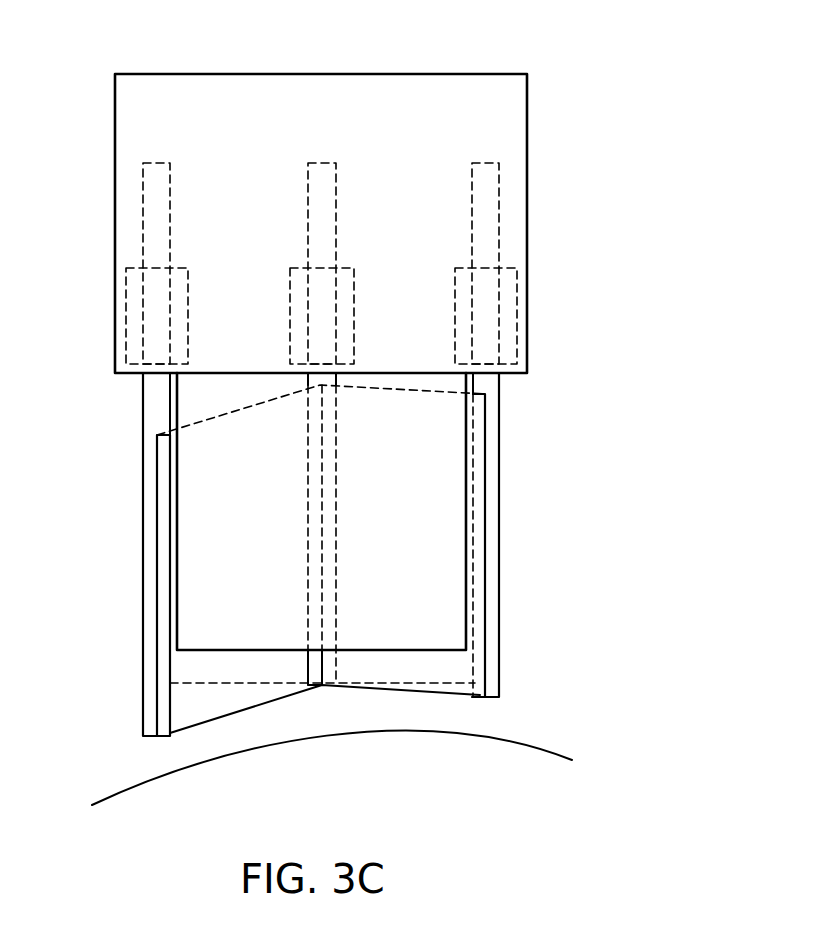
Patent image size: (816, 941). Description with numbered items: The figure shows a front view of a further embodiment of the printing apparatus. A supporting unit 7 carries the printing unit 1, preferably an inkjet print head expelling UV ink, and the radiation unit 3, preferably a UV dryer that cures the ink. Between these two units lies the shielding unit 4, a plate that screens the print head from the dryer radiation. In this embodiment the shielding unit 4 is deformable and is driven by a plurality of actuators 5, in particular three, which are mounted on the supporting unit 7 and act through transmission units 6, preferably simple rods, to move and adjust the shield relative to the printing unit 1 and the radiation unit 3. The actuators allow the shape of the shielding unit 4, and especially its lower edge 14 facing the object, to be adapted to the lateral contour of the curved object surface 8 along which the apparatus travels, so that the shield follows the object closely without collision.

The printing unit 1 is at (208, 683).
The radiation unit 3 is at (414, 650).
The shielding unit 4 is at (227, 718).
The actuator 5 is at (133, 277).
The transmission unit 6 is at (160, 215).
The supporting unit 7 is at (514, 118).
The curved surface 8 is at (540, 753).
The edge 14 is at (454, 697).